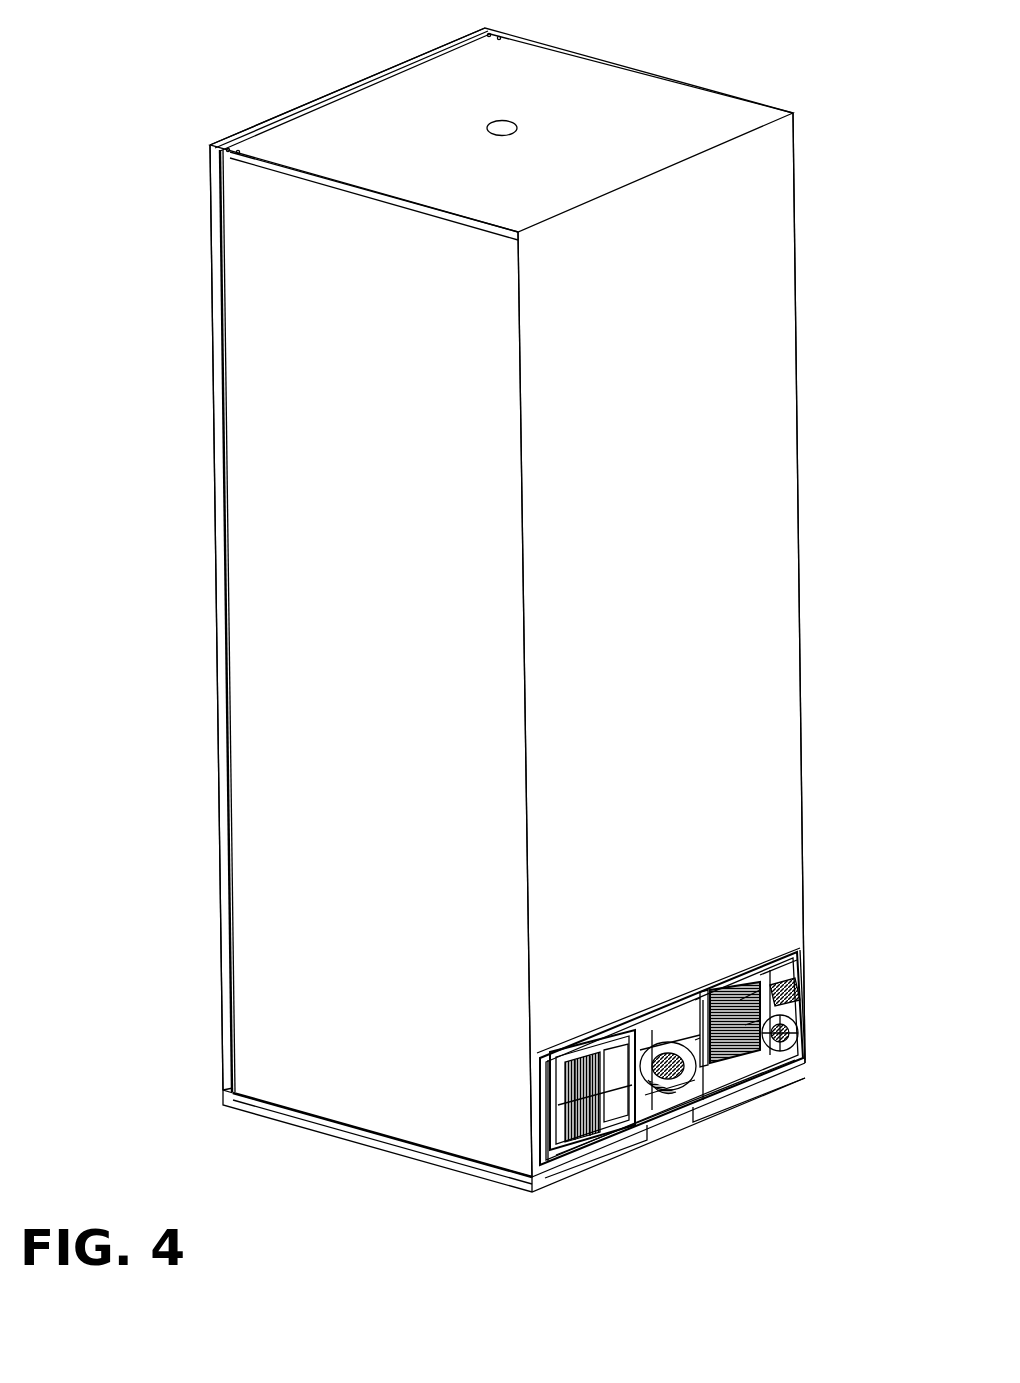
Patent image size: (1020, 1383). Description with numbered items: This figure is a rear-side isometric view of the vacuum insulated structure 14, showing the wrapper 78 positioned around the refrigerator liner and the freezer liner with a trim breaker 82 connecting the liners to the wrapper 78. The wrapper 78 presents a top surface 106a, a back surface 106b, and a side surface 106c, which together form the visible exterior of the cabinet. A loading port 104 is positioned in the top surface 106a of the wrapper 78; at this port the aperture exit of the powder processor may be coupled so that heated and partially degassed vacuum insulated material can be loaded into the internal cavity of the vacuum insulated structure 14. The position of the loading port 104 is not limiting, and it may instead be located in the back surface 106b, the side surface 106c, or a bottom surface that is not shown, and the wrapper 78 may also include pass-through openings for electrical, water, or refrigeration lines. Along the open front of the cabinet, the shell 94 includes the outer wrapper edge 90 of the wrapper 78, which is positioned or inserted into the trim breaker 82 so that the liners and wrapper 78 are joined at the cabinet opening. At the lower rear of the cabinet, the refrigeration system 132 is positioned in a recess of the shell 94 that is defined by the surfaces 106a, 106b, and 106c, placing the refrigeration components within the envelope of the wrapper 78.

The vacuum insulated structure 14 is at (168, 328).
The wrapper 78 is at (708, 112).
The trim breaker 82 is at (260, 128).
The outer wrapper edge 90 is at (223, 550).
The shell 94 is at (746, 384).
The loading port 104 is at (496, 122).
The top surface 106a is at (567, 112).
The back surface 106b is at (742, 633).
The side surface 106c is at (328, 892).
The refrigeration system 132 is at (796, 1018).